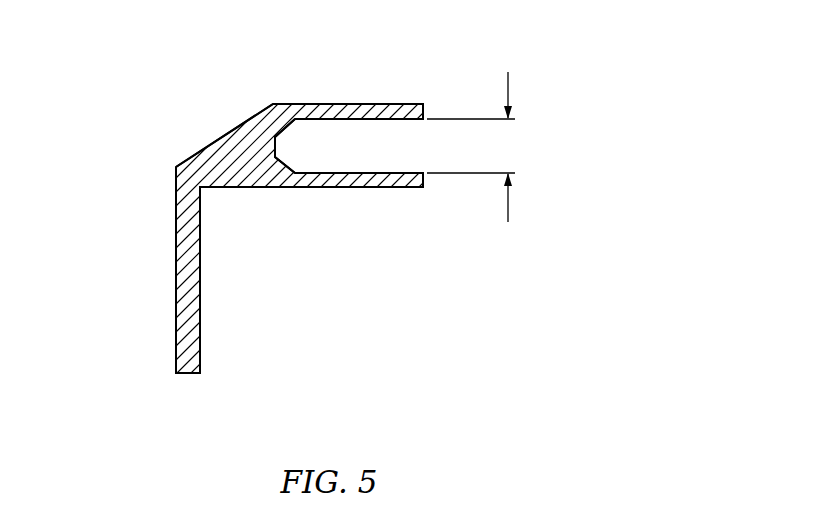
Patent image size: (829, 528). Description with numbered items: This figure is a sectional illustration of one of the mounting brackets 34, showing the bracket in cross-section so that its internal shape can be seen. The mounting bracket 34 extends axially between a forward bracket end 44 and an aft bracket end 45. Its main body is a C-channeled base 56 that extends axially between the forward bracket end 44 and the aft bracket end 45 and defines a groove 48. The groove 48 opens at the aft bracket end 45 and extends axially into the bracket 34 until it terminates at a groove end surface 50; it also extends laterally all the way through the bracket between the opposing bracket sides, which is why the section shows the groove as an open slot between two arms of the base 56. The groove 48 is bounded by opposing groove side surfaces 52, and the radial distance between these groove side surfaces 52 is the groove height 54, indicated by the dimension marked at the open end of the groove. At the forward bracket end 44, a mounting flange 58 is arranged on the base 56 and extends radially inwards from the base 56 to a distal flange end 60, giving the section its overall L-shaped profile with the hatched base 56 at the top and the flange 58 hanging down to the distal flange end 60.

The mounting bracket 34 is at (128, 83).
The forward bracket end 44 is at (176, 263).
The aft bracket end 45 is at (424, 110).
The groove 48 is at (360, 146).
The groove end surface 50 is at (276, 141).
The groove side surfaces 52 is at (386, 110).
The groove height 54 is at (508, 75).
The C-channeled base 56 is at (242, 124).
The mounting flange 58 is at (176, 315).
The distal flange end 60 is at (187, 373).